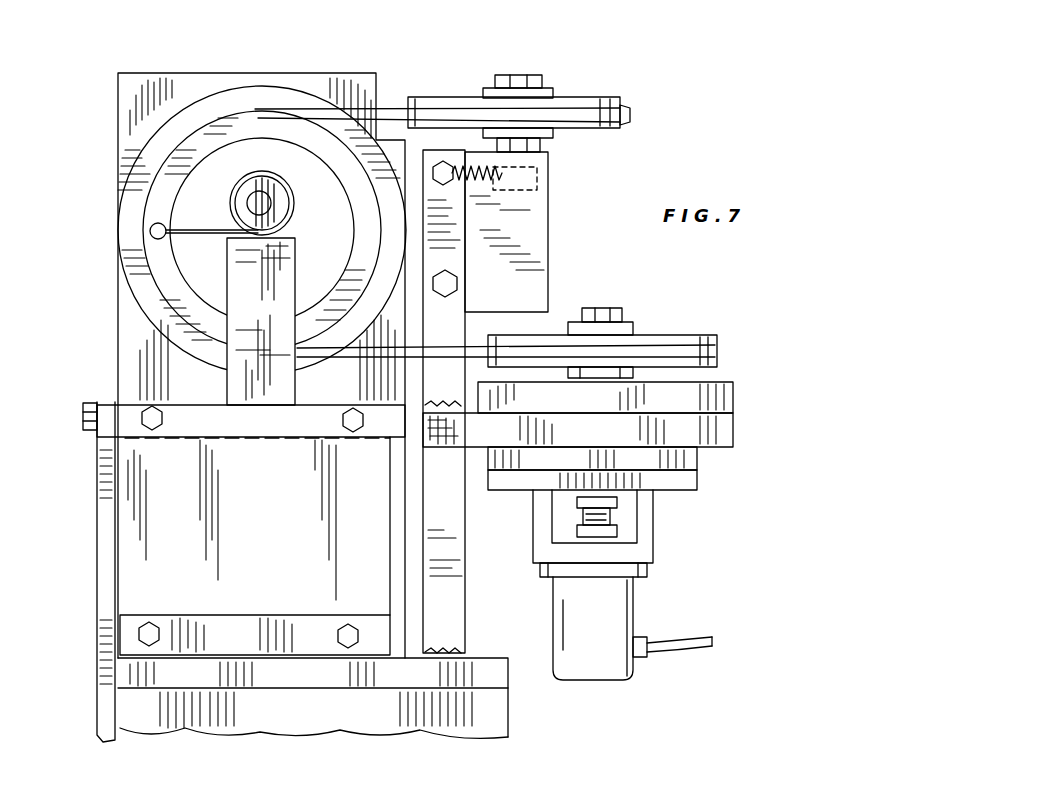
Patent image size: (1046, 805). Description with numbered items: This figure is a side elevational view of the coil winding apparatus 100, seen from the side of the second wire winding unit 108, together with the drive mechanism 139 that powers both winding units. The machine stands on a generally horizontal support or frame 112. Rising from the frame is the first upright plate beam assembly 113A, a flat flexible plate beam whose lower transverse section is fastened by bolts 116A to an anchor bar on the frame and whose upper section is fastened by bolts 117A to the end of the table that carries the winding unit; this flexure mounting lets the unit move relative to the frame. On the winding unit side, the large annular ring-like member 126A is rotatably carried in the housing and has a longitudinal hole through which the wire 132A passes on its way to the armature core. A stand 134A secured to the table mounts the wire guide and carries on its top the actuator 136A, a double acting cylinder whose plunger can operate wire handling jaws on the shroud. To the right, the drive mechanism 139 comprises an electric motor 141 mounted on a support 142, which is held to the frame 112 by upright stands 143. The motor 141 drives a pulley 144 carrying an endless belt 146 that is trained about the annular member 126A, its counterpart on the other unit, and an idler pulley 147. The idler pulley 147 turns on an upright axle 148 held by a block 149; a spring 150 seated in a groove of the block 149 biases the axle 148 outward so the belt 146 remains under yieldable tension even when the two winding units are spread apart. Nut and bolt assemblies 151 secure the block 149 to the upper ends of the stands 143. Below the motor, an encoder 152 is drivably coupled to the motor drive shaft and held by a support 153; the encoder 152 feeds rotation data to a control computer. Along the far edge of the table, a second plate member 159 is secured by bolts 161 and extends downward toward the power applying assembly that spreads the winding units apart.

The apparatus for winding coils of wire 100 is at (668, 123).
The second wire winding unit 108 is at (446, 70).
The support or frame 112 is at (485, 708).
The first upright plate beam assembly 113A is at (140, 578).
The bolts 116A is at (343, 630).
The bolts 117A is at (158, 428).
The annular ring-like member 126A is at (167, 270).
The wire 132A is at (200, 225).
The stand 134A is at (283, 292).
The actuator 136A is at (323, 192).
The drive mechanism 139 is at (744, 371).
The electric motor 141 is at (697, 463).
The support 142 is at (718, 432).
The upright stands 143 is at (452, 630).
The pulley 144 is at (690, 333).
The endless belt 146 is at (625, 110).
The idler pulley 147 is at (568, 100).
The upright axle 148 is at (508, 77).
The block 149 is at (540, 253).
The spring 150 is at (507, 173).
The nut and bolt assemblies 151 is at (438, 185).
The encoder 152 is at (610, 608).
The support 153 is at (652, 552).
The second plate member 159 is at (97, 533).
The bolts 161 is at (85, 413).